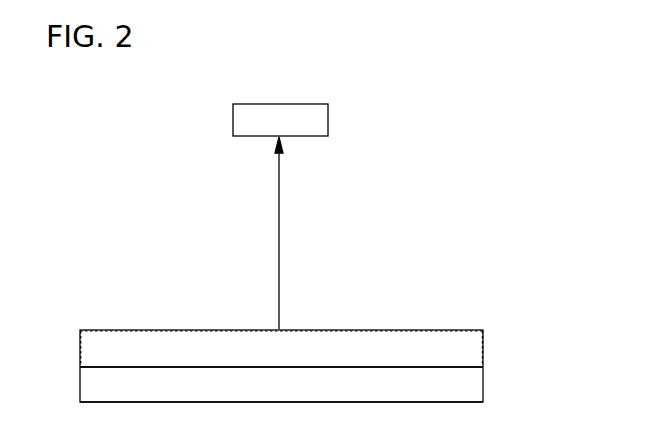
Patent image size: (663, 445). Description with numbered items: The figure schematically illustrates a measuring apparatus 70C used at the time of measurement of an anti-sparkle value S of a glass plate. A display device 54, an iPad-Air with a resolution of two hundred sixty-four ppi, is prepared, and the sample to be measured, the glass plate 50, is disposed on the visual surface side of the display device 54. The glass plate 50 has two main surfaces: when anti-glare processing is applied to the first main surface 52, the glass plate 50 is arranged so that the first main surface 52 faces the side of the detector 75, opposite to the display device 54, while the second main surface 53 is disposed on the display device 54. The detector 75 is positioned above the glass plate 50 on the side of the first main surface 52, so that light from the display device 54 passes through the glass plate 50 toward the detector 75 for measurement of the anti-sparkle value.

The glass plate 50 is at (475, 344).
The first main surface 52 is at (452, 330).
The second main surface 53 is at (465, 366).
The display device 54 is at (453, 385).
The detector 75 is at (318, 116).
The measuring apparatus 70C is at (490, 120).